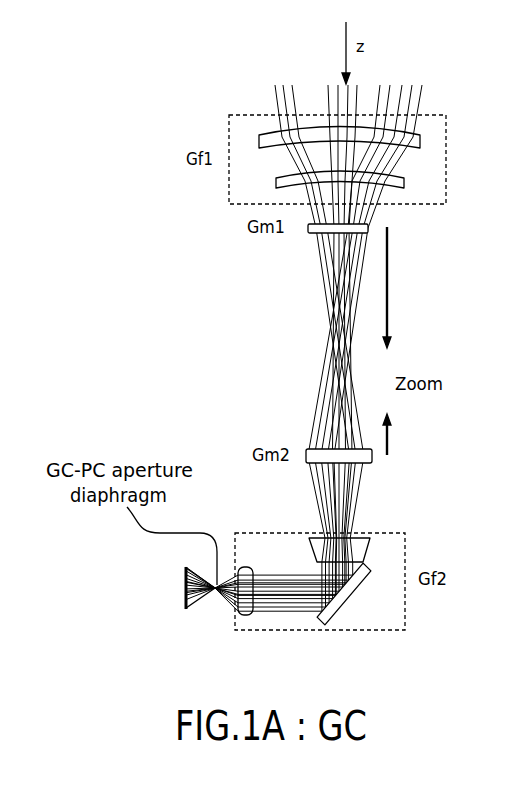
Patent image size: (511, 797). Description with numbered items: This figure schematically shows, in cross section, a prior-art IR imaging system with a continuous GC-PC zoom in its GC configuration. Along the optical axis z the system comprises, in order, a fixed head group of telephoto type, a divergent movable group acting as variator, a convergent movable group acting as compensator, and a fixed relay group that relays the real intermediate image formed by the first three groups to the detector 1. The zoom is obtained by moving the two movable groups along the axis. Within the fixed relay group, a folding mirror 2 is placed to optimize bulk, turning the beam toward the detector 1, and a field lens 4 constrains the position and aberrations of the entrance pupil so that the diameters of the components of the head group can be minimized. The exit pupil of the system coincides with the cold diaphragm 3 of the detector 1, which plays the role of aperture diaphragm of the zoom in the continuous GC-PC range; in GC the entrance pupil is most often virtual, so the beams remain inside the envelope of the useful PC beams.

The detector 1 is at (186, 600).
The folding mirror 2 is at (350, 600).
The cold diaphragm 3 is at (236, 598).
The field lens 4 is at (366, 537).